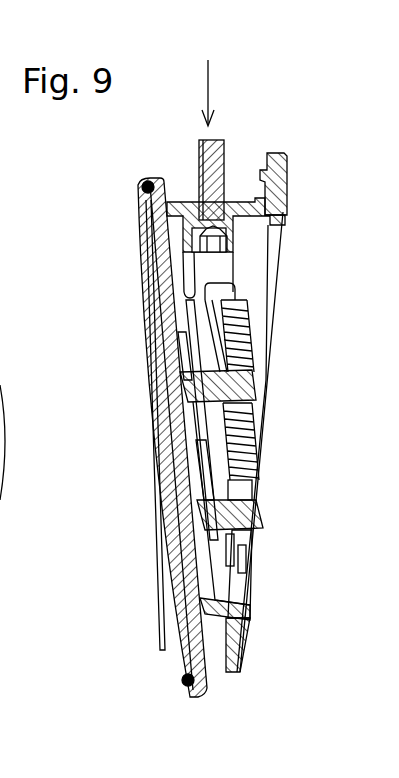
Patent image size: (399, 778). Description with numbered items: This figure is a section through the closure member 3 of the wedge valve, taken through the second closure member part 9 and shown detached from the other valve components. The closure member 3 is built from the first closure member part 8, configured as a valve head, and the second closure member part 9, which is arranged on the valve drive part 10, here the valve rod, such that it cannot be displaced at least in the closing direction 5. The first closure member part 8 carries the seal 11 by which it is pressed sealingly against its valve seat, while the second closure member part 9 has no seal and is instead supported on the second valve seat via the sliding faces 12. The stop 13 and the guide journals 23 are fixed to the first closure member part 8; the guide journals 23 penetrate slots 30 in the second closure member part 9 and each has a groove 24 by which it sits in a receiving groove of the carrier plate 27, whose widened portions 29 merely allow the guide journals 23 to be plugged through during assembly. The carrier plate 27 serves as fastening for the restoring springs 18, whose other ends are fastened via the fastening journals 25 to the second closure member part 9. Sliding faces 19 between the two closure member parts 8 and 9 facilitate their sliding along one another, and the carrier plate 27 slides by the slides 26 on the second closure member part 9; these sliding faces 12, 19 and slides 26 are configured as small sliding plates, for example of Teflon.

The closure member 3 is at (316, 216).
The closing direction 5 is at (213, 90).
The first closure member part 8 is at (140, 258).
The second closure member part 9 is at (248, 218).
The valve drive part 10 is at (218, 160).
The seal 11 is at (141, 186).
The sliding faces 12 is at (287, 175).
The stop 13 is at (158, 648).
The restoring springs 18 is at (248, 348).
The sliding faces 19 is at (204, 358).
The guide journals 23 is at (250, 386).
The groove 24 is at (250, 530).
The fastening journals 25 is at (252, 494).
The slides 26 is at (190, 316).
The carrier plate 27 is at (243, 334).
The widened portions 29 is at (254, 407).
The slots 30 is at (186, 350).